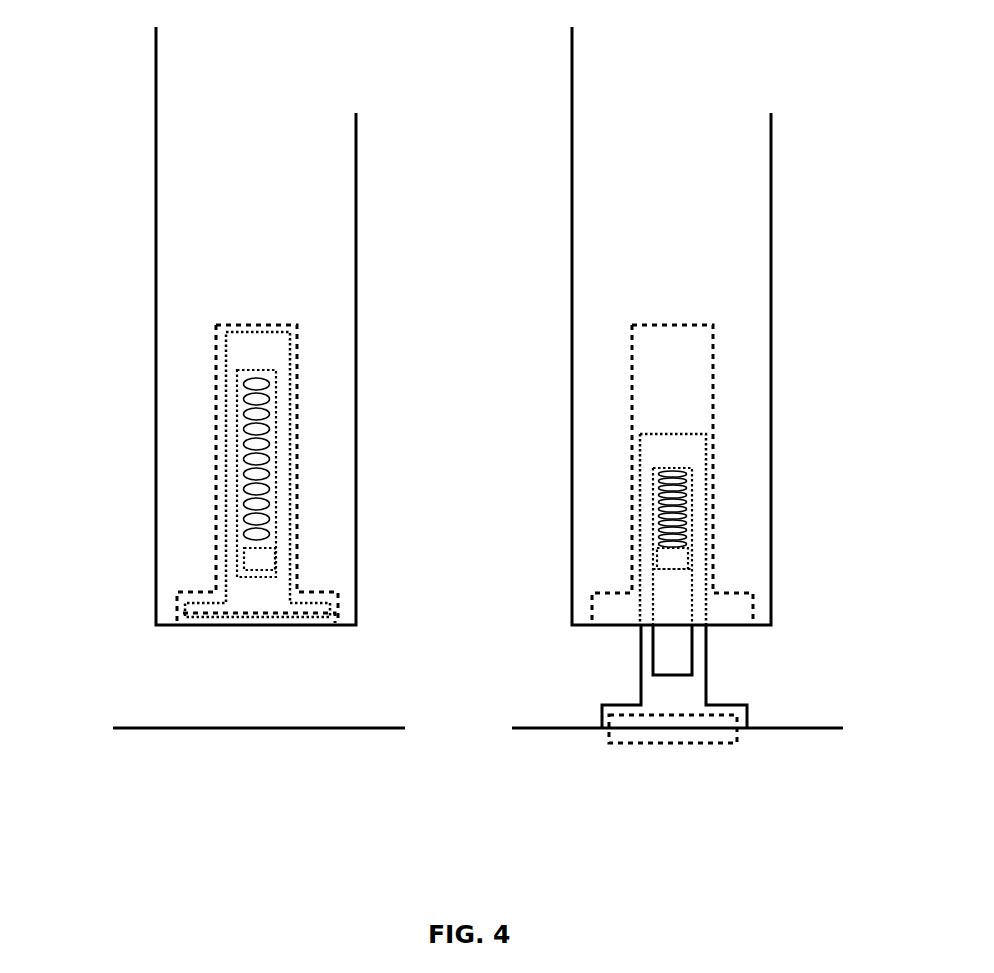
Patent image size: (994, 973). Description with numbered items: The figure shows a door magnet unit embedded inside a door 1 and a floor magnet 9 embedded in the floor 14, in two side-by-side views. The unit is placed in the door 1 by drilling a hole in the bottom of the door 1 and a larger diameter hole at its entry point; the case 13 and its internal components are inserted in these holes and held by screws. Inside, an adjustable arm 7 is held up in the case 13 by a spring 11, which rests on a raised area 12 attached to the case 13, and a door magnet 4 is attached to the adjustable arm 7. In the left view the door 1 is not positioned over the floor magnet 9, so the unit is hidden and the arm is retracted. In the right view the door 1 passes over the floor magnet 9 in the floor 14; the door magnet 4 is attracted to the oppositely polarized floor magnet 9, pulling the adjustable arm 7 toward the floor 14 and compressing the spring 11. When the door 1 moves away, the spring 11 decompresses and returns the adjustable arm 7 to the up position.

The door 1 is at (298, 265).
The case 13 is at (297, 353).
The adjustable arm 7 is at (285, 447).
The spring 11 is at (260, 503).
The raised area 12 is at (258, 558).
The door magnet 4 is at (297, 618).
The floor magnet 9 is at (645, 742).
The floor 14 is at (165, 730).